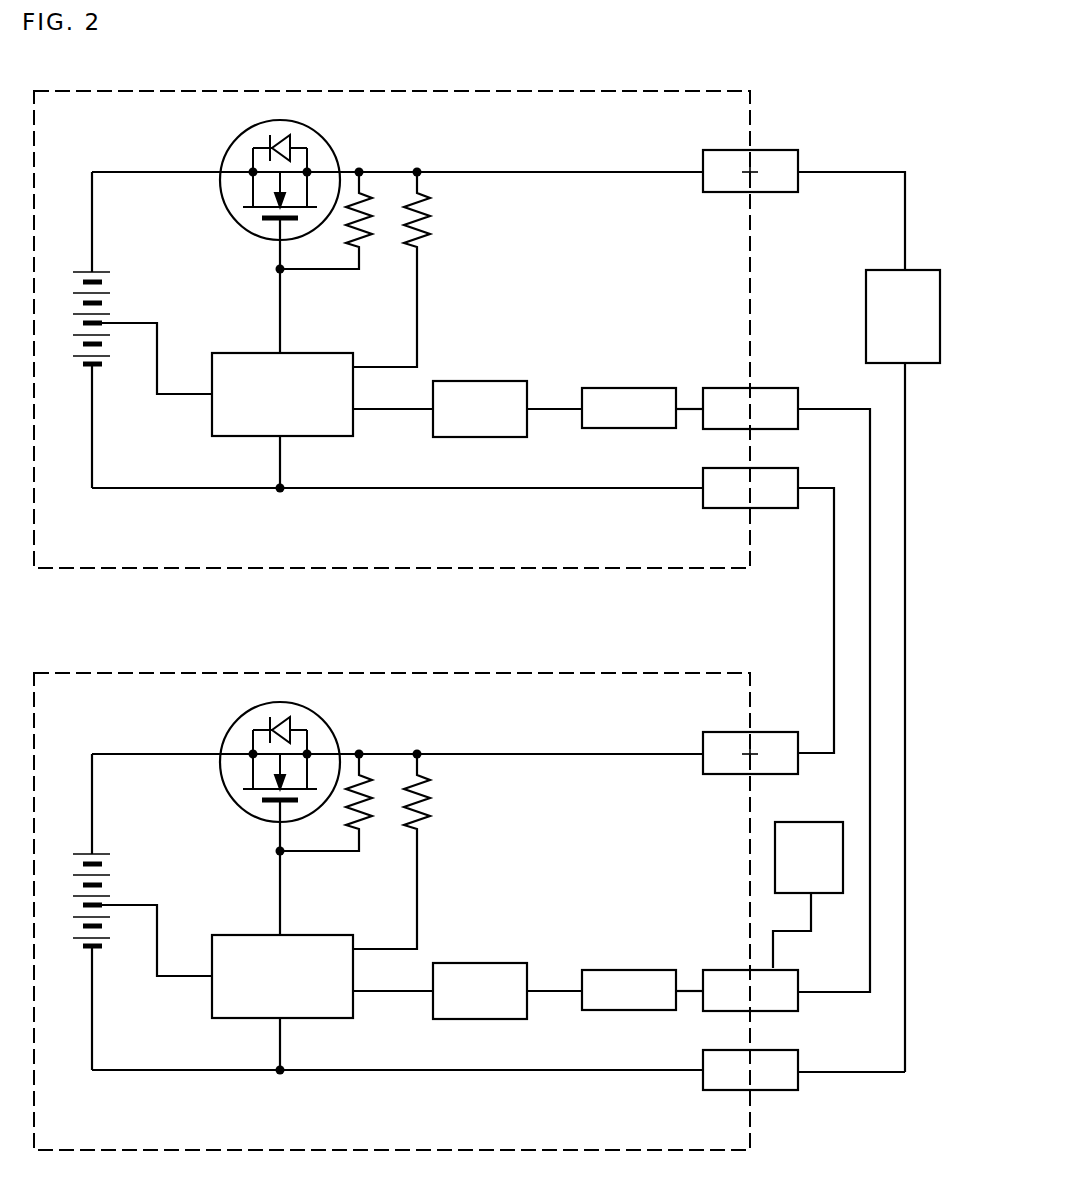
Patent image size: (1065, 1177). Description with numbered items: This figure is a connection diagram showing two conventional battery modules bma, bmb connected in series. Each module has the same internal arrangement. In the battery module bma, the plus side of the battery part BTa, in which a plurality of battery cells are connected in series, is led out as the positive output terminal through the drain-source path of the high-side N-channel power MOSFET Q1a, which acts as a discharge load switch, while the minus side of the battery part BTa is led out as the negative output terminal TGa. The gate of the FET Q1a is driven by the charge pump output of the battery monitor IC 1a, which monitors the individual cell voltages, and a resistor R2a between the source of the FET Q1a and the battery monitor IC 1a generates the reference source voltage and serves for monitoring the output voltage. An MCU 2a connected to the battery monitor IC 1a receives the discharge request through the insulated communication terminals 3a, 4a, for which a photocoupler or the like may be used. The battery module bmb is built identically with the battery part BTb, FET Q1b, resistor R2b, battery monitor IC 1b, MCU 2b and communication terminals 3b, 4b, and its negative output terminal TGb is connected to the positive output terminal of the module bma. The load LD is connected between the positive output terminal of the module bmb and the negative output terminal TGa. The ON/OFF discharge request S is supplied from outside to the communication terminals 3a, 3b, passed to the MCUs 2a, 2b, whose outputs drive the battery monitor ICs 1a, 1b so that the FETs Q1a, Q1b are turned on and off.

The battery module bmb is at (450, 91).
The battery module bma is at (392, 896).
The battery part BTb is at (106, 283).
The battery part BTa is at (109, 882).
The N-channel MOSFET Q1b is at (245, 232).
The N-channel MOSFET Q1a is at (259, 773).
The resistor R2b is at (432, 235).
The resistor R2a is at (414, 851).
The battery monitor IC 1b is at (250, 353).
The battery monitor IC 1a is at (276, 963).
The MCU 2b is at (478, 381).
The MCU 2a is at (477, 975).
The communication terminal 3b is at (728, 388).
The communication terminal 3a is at (736, 976).
The communication terminal 4b is at (628, 388).
The communication terminal 4a is at (625, 974).
The negative output terminal TGb is at (728, 508).
The negative output terminal TGa is at (727, 1086).
The load LD is at (866, 318).
The ON/OFF signal S is at (812, 822).